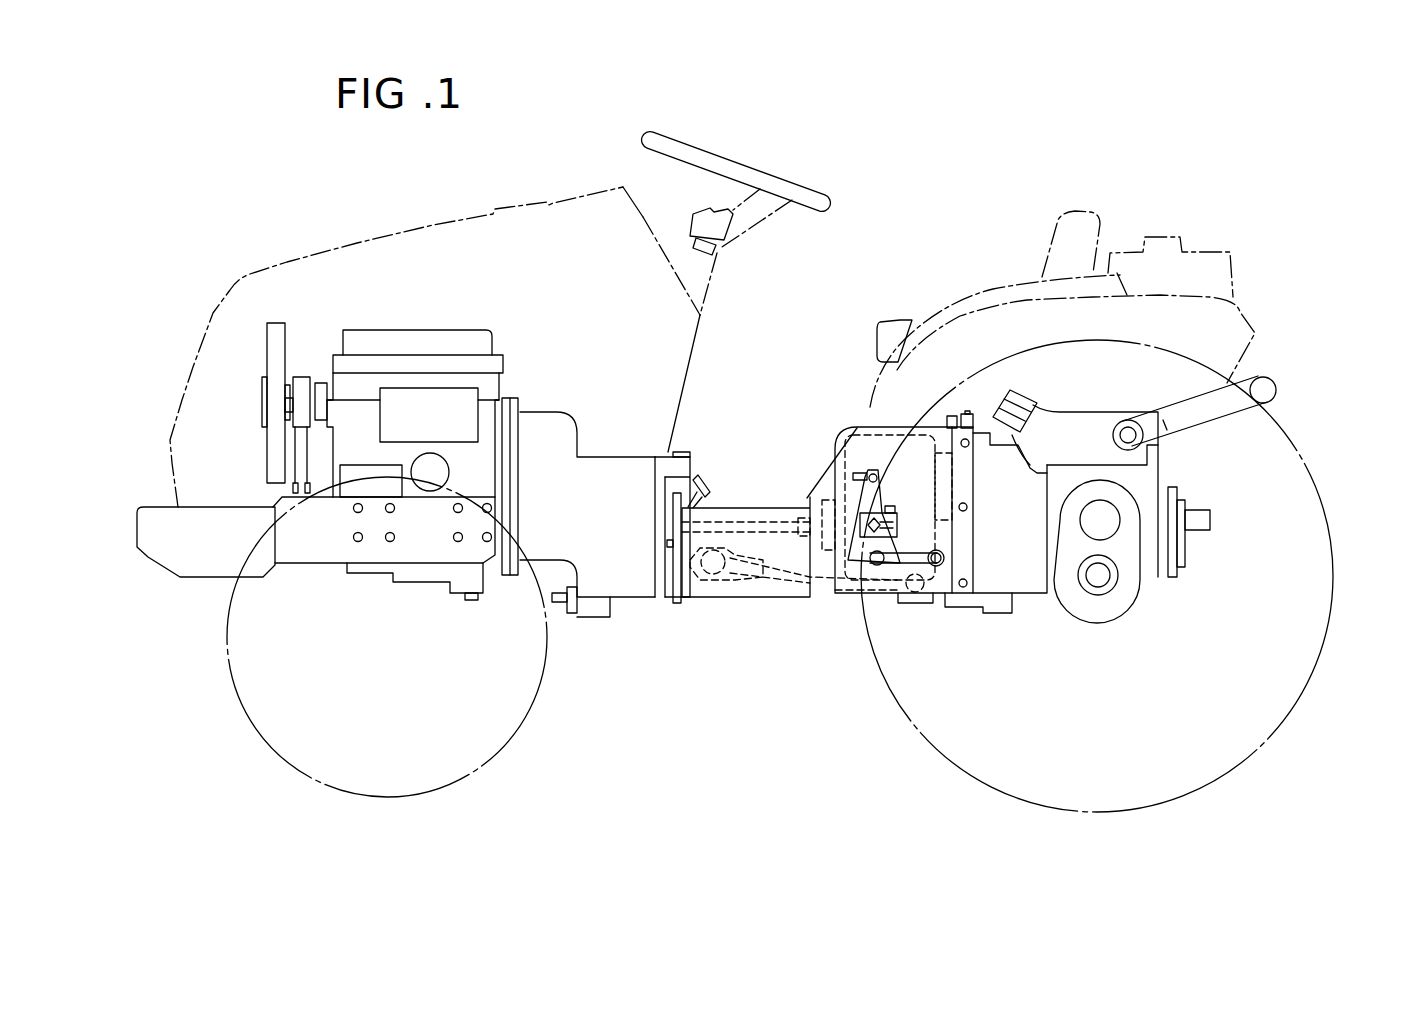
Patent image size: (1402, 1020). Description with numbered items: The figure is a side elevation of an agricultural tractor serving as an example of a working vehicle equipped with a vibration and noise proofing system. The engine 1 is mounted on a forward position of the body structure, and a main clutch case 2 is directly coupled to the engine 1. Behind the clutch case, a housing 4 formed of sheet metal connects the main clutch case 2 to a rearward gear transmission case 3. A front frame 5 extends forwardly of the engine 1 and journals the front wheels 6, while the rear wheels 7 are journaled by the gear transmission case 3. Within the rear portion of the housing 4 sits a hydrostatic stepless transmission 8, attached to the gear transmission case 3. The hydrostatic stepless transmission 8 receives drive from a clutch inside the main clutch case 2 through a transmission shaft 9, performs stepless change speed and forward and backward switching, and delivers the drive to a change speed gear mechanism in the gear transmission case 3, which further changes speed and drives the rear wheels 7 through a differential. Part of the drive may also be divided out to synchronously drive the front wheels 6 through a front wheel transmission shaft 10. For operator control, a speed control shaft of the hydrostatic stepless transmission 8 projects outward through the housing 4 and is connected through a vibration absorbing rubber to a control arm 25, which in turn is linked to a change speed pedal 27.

The engine 1 is at (407, 332).
The main clutch case 2 is at (576, 414).
The gear transmission case 3 is at (1030, 580).
The housing 4 is at (718, 600).
The front frame 5 is at (207, 577).
The front wheels 6 is at (238, 697).
The rear wheels 7 is at (888, 697).
The hydrostatic stepless transmission 8 is at (871, 437).
The transmission shaft 9 is at (782, 520).
The front wheel transmission shaft 10 is at (797, 580).
The control arm 25 is at (867, 502).
The change speed pedal 27 is at (715, 477).